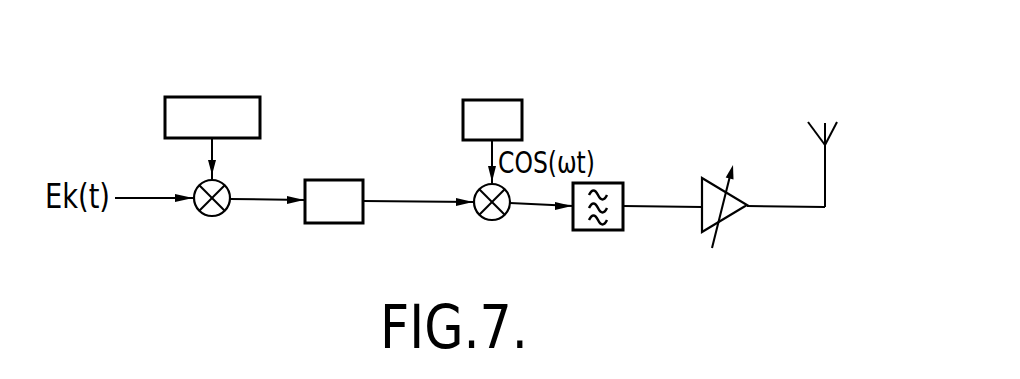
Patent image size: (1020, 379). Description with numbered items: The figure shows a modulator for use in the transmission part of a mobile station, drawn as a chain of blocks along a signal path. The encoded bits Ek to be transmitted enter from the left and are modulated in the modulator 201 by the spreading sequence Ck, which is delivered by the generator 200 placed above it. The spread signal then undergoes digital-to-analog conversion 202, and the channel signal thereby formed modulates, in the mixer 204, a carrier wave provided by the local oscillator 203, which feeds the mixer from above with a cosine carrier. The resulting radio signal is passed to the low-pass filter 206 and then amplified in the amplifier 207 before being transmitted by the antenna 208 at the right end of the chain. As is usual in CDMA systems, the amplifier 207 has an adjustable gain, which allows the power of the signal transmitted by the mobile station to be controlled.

The generator 200 is at (193, 95).
The modulator 201 is at (215, 217).
The digital-to-analog conversion 202 is at (343, 225).
The local oscillator 203 is at (470, 98).
The mixer 204 is at (495, 223).
The low-pass filter 206 is at (600, 230).
The amplifier 207 is at (730, 218).
The antenna 208 is at (827, 150).